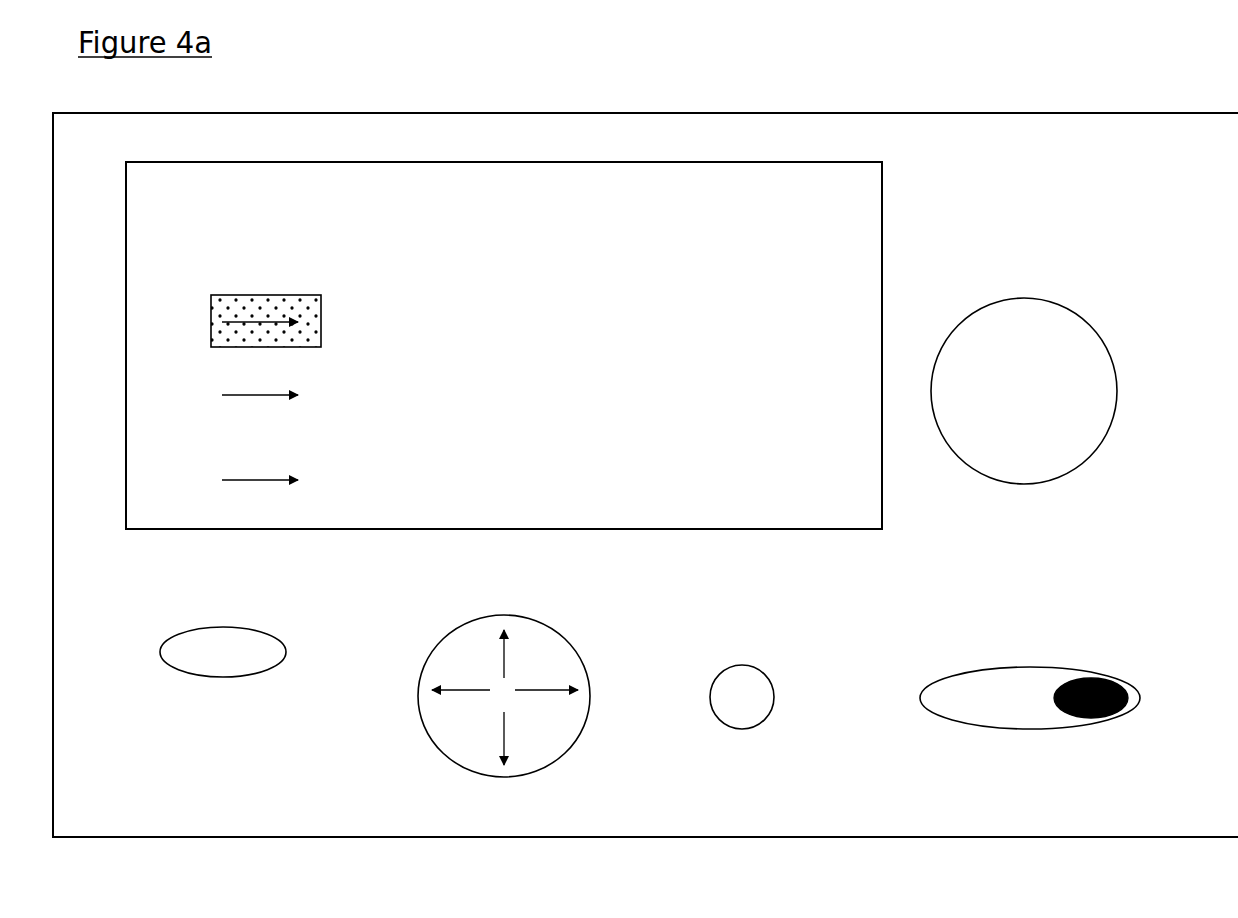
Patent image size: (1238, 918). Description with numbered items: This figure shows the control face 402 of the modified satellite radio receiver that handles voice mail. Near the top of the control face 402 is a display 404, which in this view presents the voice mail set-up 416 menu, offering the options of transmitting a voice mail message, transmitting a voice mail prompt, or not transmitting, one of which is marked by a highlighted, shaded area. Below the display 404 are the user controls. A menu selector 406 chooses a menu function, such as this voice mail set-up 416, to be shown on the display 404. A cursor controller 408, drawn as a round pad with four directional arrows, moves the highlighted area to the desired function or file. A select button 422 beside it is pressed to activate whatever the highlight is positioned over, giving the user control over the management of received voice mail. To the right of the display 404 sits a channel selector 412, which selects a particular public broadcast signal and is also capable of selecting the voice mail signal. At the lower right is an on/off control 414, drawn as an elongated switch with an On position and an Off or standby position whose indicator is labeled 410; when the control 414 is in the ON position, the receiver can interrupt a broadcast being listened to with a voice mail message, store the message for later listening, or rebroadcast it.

The control face 402 is at (771, 112).
The display 404 is at (882, 240).
The menu selector 406 is at (243, 667).
The cursor controller 408 is at (590, 703).
The off (standby) position indicator 410 is at (1103, 680).
The channel selector 412 is at (1043, 440).
The on/off control 414 is at (942, 675).
The voice mail set-up 416 is at (743, 251).
The select button 422 is at (772, 715).